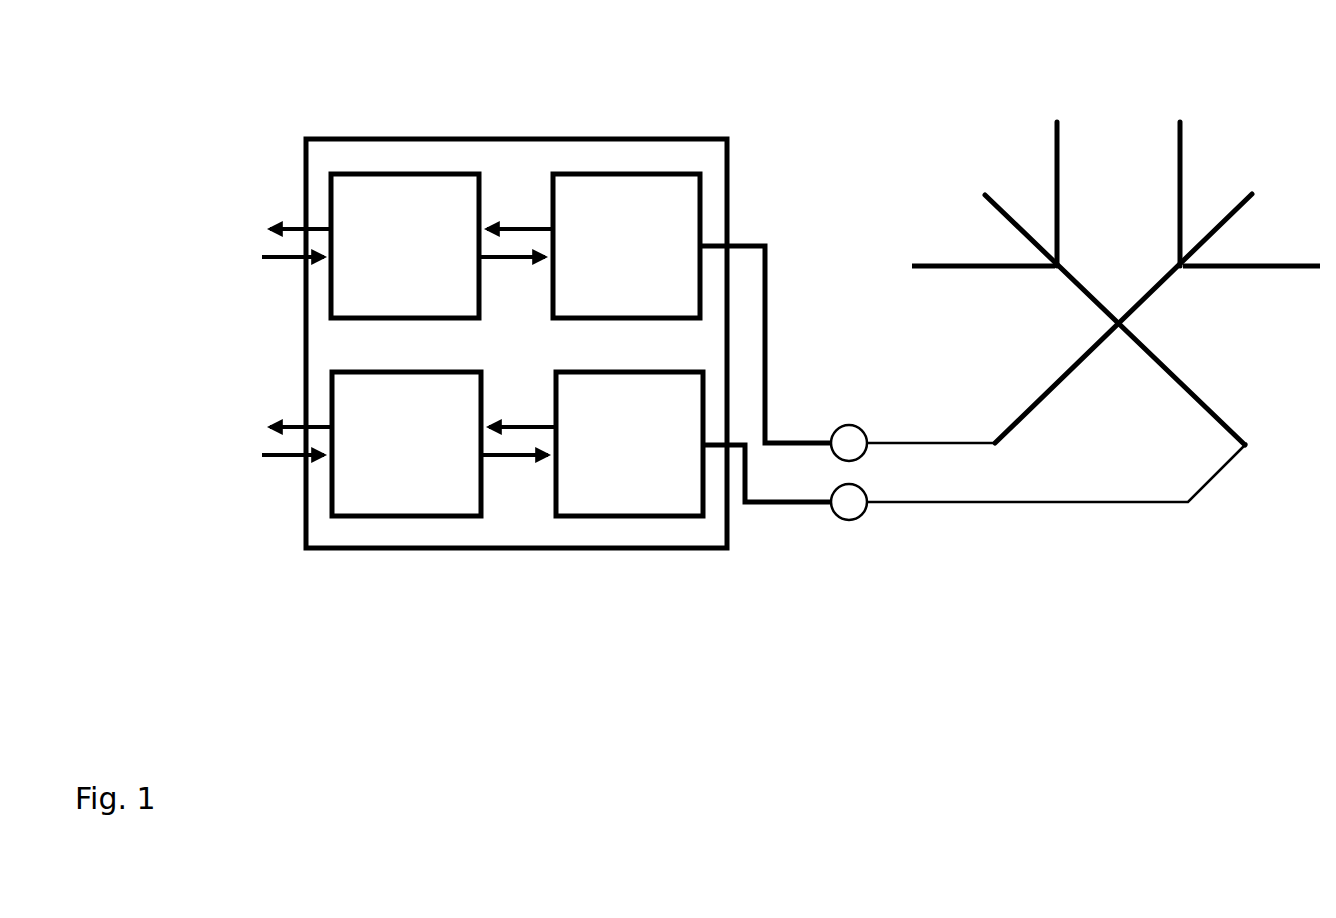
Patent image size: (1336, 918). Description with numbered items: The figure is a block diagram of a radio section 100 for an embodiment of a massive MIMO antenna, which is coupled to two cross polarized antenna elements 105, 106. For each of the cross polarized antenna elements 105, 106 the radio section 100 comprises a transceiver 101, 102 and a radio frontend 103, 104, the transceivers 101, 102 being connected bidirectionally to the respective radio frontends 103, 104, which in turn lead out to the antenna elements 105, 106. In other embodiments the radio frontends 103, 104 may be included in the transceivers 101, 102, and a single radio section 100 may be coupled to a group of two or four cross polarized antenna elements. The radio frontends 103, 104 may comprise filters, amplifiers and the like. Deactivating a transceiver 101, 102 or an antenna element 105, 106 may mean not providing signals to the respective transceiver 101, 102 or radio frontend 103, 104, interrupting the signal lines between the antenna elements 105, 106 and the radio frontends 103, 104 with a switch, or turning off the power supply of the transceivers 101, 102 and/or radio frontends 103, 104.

The radio section 100 is at (323, 550).
The transceiver 101 is at (427, 516).
The transceiver 102 is at (432, 174).
The radio frontend 103 is at (627, 516).
The radio frontend 104 is at (632, 174).
The cross polarized antenna element 105 is at (987, 193).
The cross polarized antenna element 106 is at (1233, 205).